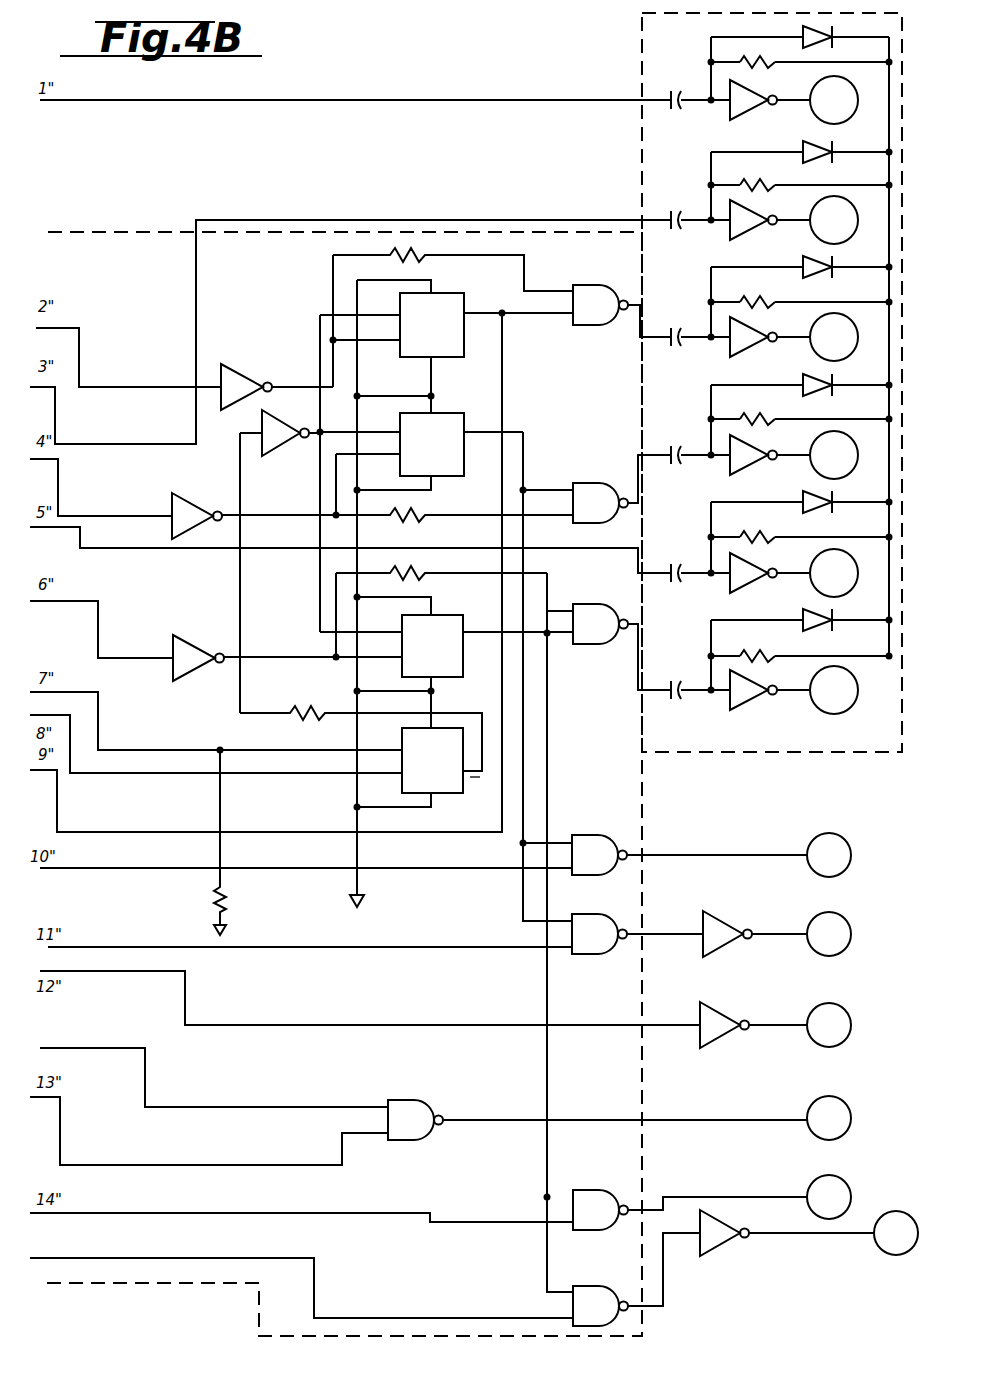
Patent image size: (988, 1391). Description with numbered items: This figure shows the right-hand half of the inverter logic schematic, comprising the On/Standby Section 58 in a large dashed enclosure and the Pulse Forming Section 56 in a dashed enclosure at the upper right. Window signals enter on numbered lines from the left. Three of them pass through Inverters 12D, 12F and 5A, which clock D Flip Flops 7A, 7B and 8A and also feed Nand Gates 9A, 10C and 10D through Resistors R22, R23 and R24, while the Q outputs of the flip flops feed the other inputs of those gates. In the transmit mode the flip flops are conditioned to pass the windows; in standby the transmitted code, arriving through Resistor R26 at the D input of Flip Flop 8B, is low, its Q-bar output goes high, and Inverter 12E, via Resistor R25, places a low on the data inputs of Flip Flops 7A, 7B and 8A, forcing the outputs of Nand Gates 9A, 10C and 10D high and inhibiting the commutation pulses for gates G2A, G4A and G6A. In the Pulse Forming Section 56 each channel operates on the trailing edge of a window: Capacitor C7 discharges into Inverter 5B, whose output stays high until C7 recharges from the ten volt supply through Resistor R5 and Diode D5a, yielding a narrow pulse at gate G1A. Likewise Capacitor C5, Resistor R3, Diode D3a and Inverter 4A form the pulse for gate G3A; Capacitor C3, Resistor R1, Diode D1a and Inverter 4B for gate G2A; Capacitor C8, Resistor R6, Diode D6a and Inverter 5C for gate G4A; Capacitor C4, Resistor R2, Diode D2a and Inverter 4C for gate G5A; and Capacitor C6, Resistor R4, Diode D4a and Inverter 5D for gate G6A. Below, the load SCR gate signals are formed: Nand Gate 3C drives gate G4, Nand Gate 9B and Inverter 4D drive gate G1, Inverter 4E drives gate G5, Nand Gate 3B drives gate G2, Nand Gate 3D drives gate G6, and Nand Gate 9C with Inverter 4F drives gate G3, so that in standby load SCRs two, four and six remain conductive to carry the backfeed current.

The Pulse Forming Section 56 is at (646, 46).
The On/Standby Section 58 is at (338, 768).
The resistor R22 is at (395, 252).
The resistor R23 is at (420, 514).
The resistor R24 is at (418, 572).
The resistor R25 is at (326, 698).
The resistor R26 is at (232, 900).
The D flip flop 7A is at (446, 346).
The D flip flop 7B is at (421, 446).
The D flip flop 8A is at (446, 662).
The D flip flop 8B is at (418, 762).
The Nand gate 9A is at (622, 311).
The Nand gate 10C is at (622, 489).
The Nand gate 10D is at (622, 647).
The Nand gate 3C is at (689, 855).
The Nand gate 9B is at (637, 934).
The Nand gate 3B is at (597, 1120).
The Nand gate 3D is at (690, 1210).
The Nand gate 9C is at (636, 1279).
The inverter 12D is at (277, 387).
The inverter 12E is at (280, 433).
The inverter 12F is at (197, 516).
The inverter 5A is at (287, 658).
The inverter 4D is at (755, 934).
The inverter 4E is at (753, 1025).
The inverter 4F is at (787, 1233).
The gate G1 is at (829, 934).
The gate G2 is at (829, 1118).
The gate G3 is at (896, 1233).
The gate G4 is at (829, 855).
The gate G5 is at (829, 1025).
The gate G6 is at (829, 1197).
The capacitor C3 is at (666, 328).
The capacitor C4 is at (666, 564).
The capacitor C5 is at (666, 211).
The capacitor C6 is at (666, 681).
The capacitor C7 is at (666, 91).
The capacitor C8 is at (666, 446).
The resistor R1 is at (757, 294).
The resistor R2 is at (757, 529).
The resistor R3 is at (757, 177).
The resistor R4 is at (757, 648).
The resistor R5 is at (757, 54).
The resistor R6 is at (757, 411).
The diode D1a is at (801, 263).
The diode D2a is at (801, 498).
The diode D3a is at (801, 148).
The diode D4a is at (801, 616).
The diode D5a is at (801, 33).
The diode D6a is at (801, 381).
The inverter 4A is at (770, 220).
The inverter 4B is at (770, 337).
The inverter 4C is at (770, 573).
The inverter 5B is at (770, 100).
The inverter 5C is at (770, 455).
The inverter 5D is at (770, 690).
The gate G1A is at (834, 100).
The gate G2A is at (834, 337).
The gate G3A is at (834, 220).
The gate G4A is at (834, 455).
The gate G5A is at (834, 573).
The gate G6A is at (834, 690).